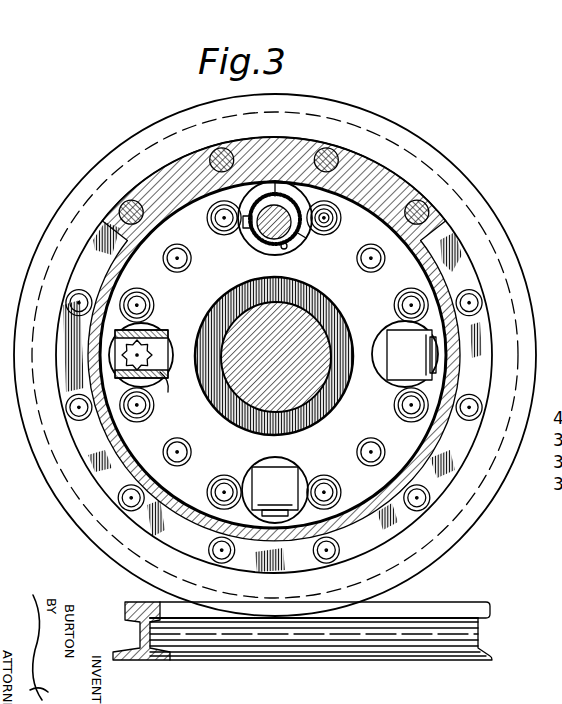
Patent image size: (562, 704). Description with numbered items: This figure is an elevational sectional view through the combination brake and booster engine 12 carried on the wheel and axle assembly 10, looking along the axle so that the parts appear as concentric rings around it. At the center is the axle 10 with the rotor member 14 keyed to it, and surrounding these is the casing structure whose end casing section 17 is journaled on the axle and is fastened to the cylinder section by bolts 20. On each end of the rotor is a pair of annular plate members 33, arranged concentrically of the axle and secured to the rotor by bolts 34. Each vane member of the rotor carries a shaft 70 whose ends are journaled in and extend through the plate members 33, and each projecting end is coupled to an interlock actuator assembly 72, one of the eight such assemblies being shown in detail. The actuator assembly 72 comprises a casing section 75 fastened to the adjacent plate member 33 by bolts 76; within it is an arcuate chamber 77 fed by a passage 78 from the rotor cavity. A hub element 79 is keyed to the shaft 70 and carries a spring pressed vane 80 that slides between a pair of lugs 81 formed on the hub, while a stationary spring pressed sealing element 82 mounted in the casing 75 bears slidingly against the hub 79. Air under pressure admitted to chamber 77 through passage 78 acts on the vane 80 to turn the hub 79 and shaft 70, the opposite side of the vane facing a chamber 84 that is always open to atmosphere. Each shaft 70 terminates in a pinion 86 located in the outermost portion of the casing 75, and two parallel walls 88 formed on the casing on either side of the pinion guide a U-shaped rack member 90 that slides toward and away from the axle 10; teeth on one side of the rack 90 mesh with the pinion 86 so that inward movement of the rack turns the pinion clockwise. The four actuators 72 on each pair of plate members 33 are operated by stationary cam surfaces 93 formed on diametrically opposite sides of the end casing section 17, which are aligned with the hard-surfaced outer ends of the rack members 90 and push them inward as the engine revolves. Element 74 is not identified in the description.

The wheel and axle assembly 10 is at (322, 326).
The combination brake and booster engine 12 is at (486, 270).
The rotor member 14 is at (336, 396).
The end casing section 17 is at (459, 282).
The bolts 20 is at (469, 290).
The annular plate members 33 is at (318, 192).
The bolts 34 is at (183, 256).
The shaft 70 is at (300, 204).
The interlock actuator assembly 72 is at (246, 183).
The plate 74 is at (436, 383).
The casing section 75 is at (265, 246).
The bolts 76 is at (356, 180).
The arcuate chamber 77 is at (302, 230).
The passage 78 is at (284, 247).
The hub element 79 is at (277, 200).
The spring pressed vane 80 is at (306, 240).
The lugs 81 is at (329, 220).
The stationary spring pressed sealing element 82 is at (247, 234).
The chamber 84 is at (276, 196).
The pinion 86 is at (163, 385).
The parallel walls 88 is at (165, 325).
The U-shaped rack member 90 is at (160, 347).
The cam surfaces 93 is at (112, 350).